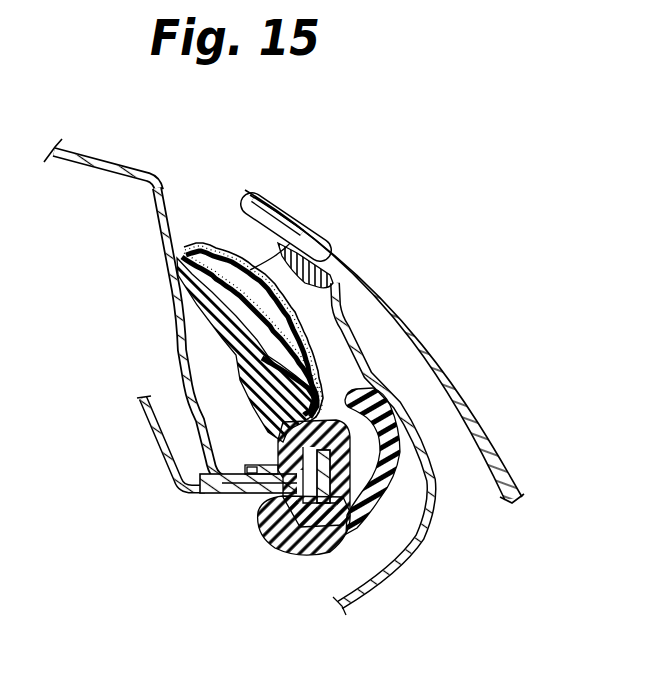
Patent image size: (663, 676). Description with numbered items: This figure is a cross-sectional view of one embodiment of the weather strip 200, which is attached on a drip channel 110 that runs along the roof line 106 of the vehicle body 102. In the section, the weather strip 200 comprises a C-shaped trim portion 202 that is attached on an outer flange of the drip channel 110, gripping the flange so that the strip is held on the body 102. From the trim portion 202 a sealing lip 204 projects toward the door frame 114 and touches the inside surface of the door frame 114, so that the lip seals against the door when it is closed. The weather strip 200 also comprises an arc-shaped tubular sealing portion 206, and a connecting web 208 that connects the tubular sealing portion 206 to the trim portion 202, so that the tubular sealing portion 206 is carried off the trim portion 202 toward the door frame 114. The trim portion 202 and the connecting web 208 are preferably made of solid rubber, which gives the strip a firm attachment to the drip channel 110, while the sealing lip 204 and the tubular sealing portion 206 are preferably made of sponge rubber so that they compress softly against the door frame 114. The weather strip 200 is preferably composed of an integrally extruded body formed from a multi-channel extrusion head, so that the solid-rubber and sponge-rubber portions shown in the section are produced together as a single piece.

The body 102 is at (174, 303).
The roof line 106 is at (131, 168).
The drip channel 110 is at (237, 493).
The door frame 114 is at (390, 310).
The weather strip 200 is at (205, 240).
The trim portion 202 is at (281, 552).
The sealing lip 204 is at (362, 534).
The tubular sealing portion 206 is at (300, 237).
The connecting web 208 is at (253, 410).